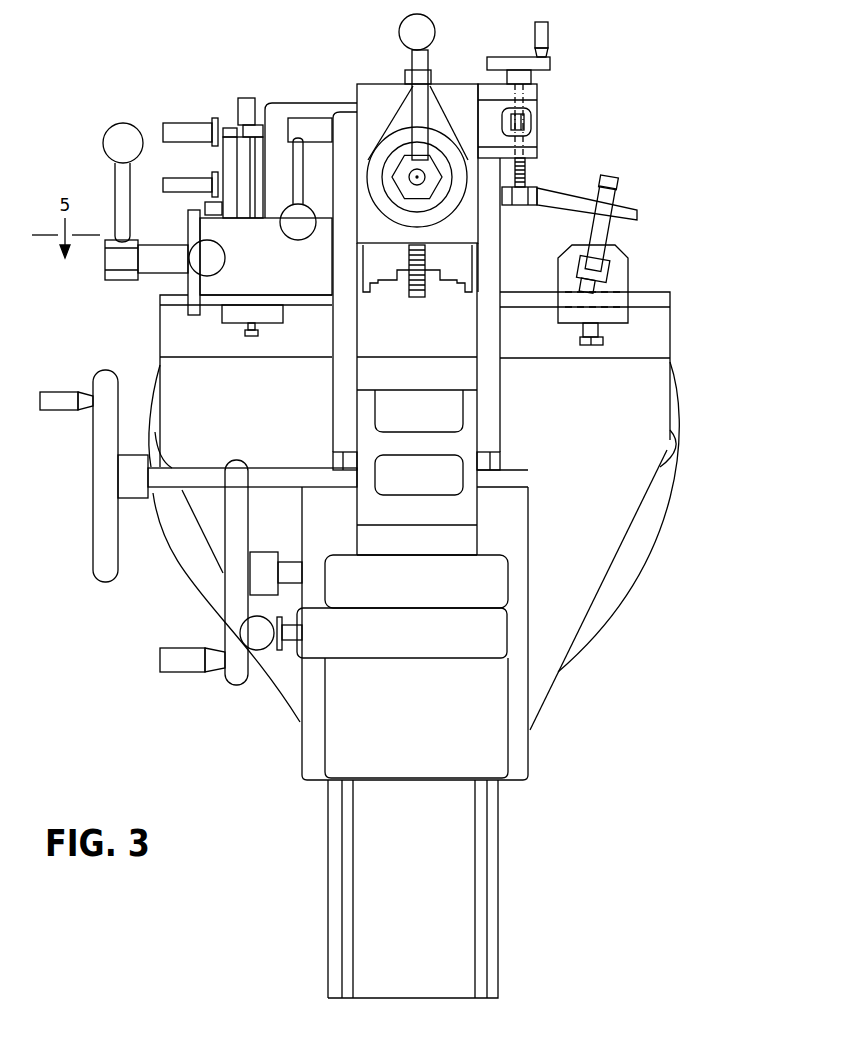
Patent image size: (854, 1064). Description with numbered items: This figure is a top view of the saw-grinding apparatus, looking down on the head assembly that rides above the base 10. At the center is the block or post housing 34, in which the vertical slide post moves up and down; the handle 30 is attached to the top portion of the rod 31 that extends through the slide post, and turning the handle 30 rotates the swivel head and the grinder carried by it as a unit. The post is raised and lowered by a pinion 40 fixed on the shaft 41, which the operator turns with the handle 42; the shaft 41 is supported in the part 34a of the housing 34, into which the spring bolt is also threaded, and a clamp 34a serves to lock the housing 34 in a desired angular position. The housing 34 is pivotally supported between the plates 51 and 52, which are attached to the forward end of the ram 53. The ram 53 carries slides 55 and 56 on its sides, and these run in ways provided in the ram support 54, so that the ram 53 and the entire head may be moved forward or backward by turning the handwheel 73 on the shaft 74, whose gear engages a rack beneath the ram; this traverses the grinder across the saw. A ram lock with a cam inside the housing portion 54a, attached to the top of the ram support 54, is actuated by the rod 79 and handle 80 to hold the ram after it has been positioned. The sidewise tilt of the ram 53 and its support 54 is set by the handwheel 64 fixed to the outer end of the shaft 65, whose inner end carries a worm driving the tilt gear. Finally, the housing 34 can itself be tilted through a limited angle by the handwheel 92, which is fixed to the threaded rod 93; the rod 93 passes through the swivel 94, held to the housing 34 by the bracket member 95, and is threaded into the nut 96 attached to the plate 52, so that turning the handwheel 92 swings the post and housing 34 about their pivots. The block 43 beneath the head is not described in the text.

The base 10 is at (648, 575).
The handle 30 is at (428, 40).
The rod 31 is at (428, 165).
The block 34 is at (468, 233).
The part of the housing 34a is at (300, 120).
The pinion 40 is at (418, 297).
The shaft 41 is at (158, 250).
The handle 42 is at (125, 135).
The block 43 is at (310, 290).
The plate 51 is at (345, 120).
The plate 52 is at (492, 210).
The ram 53 is at (468, 467).
The ram support 54 is at (495, 725).
The housing portion 54a is at (410, 653).
The slide 55 is at (493, 842).
The slide 56 is at (337, 860).
The handwheel 64 is at (102, 465).
The shaft 65 is at (198, 470).
The handwheel 73 is at (232, 608).
The shaft 74 is at (287, 567).
The rod 79 is at (290, 642).
The handle 80 is at (263, 657).
The handwheel 92 is at (545, 63).
The threaded rod 93 is at (525, 172).
The swivel 94 is at (533, 123).
The bracket member 95 is at (537, 100).
The nut 96 is at (537, 185).